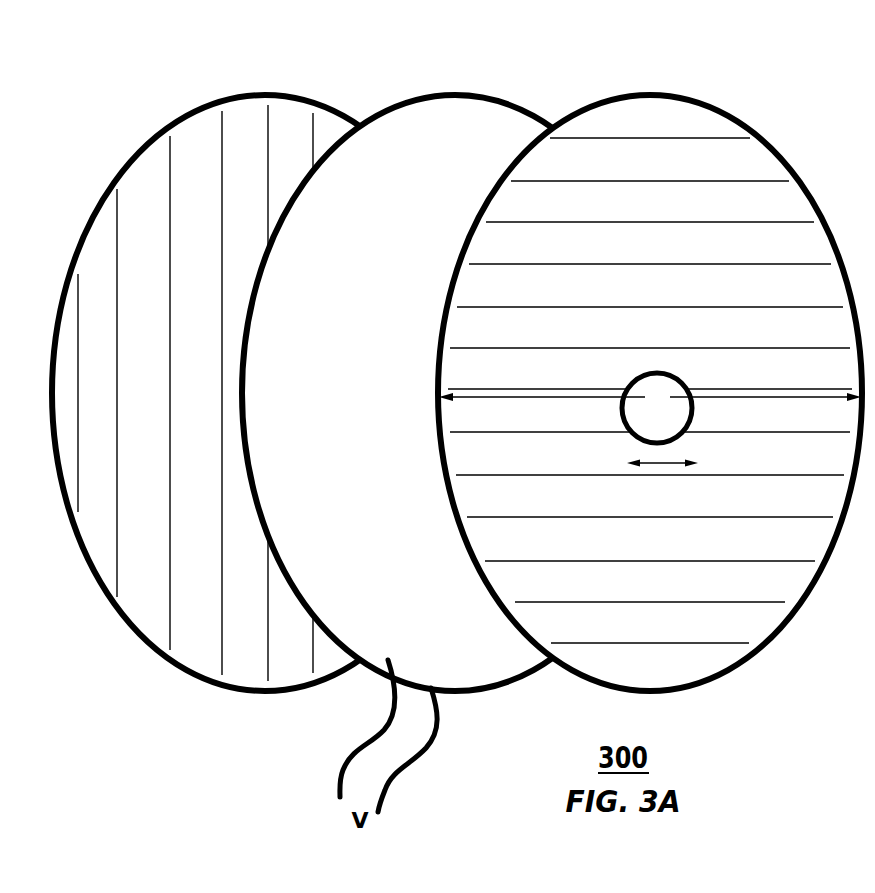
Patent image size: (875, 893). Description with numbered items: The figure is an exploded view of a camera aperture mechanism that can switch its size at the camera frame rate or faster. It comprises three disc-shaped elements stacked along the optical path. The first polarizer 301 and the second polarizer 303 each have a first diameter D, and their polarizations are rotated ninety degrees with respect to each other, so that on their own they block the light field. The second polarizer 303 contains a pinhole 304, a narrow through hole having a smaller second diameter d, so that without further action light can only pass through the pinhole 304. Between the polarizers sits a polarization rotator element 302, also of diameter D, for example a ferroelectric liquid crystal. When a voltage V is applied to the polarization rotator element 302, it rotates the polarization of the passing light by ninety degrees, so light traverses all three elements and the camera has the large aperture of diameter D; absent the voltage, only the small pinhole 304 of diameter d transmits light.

The first polarizer 301 is at (258, 97).
The polarization rotator element 302 is at (464, 96).
The second polarizer 303 is at (652, 96).
The pinhole 304 is at (654, 372).